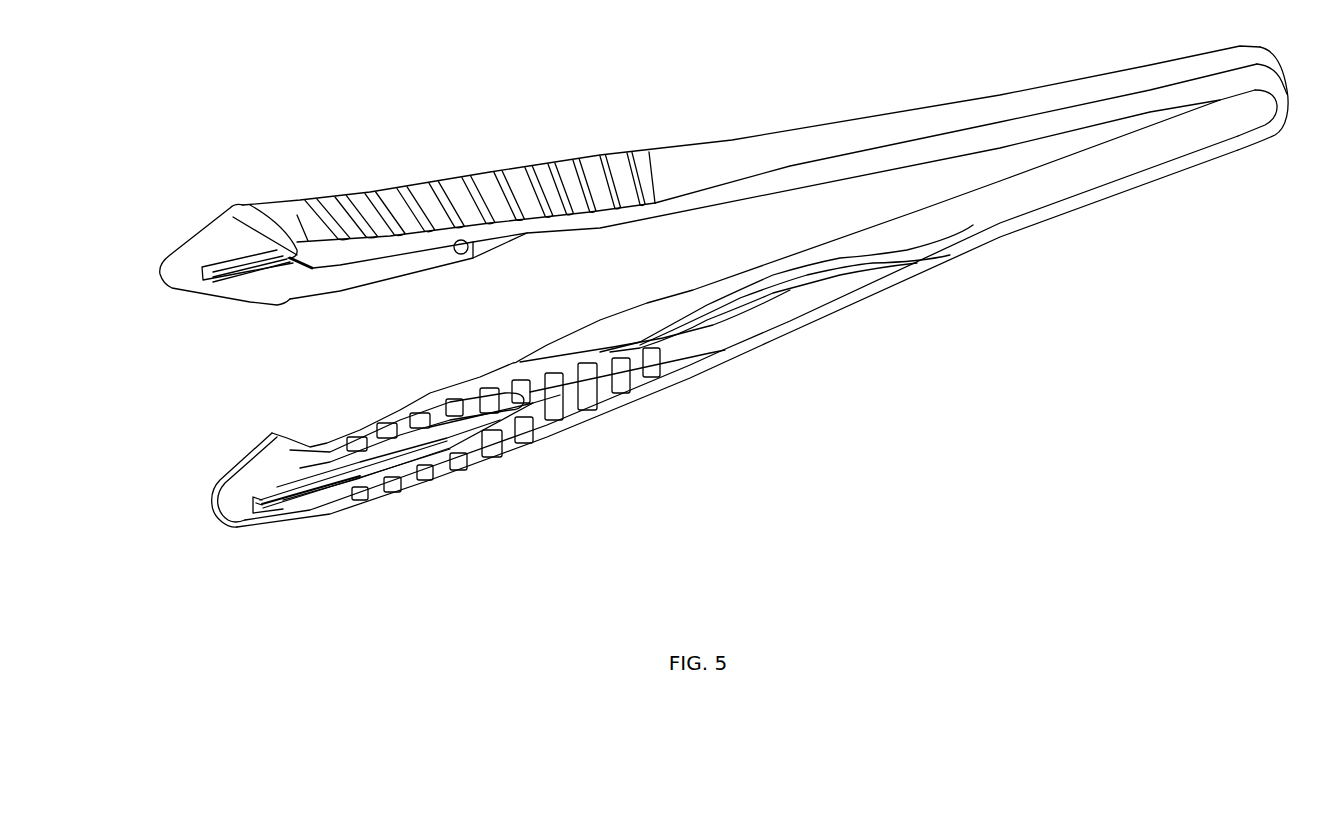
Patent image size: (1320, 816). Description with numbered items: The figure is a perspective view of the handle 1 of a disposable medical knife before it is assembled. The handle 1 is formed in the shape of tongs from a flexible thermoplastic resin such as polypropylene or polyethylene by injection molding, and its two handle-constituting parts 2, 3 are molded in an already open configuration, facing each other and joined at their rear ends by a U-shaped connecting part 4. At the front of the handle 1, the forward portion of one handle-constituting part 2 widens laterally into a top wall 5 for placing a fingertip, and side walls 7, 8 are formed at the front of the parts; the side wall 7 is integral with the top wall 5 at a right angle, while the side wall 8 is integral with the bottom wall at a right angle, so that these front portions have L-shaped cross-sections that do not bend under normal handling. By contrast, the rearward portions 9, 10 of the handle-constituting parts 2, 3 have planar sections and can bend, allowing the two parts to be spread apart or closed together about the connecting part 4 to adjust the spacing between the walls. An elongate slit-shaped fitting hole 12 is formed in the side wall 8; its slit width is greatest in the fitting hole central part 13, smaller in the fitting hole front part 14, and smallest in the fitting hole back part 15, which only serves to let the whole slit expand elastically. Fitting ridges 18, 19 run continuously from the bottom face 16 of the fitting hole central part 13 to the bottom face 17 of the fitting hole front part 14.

The handle 1 is at (835, 122).
The handle-constituting part 2 is at (733, 140).
The handle-constituting part 3 is at (790, 321).
The U-shaped connecting part 4 is at (1285, 112).
The top wall 5 is at (462, 183).
The side wall 7 is at (227, 242).
The side wall 8 is at (540, 413).
The rearward portion 9 is at (1058, 95).
The rearward portion 10 is at (1085, 195).
The fitting hole 12 is at (373, 418).
The fitting hole central part 13 is at (373, 453).
The fitting hole front part 14 is at (313, 477).
The fitting hole back part 15 is at (480, 423).
The bottom face of the fitting hole central part 16 is at (433, 458).
The bottom face of the fitting hole front part 17 is at (328, 488).
The fitting ridge 18 is at (400, 460).
The fitting ridge 19 is at (303, 498).